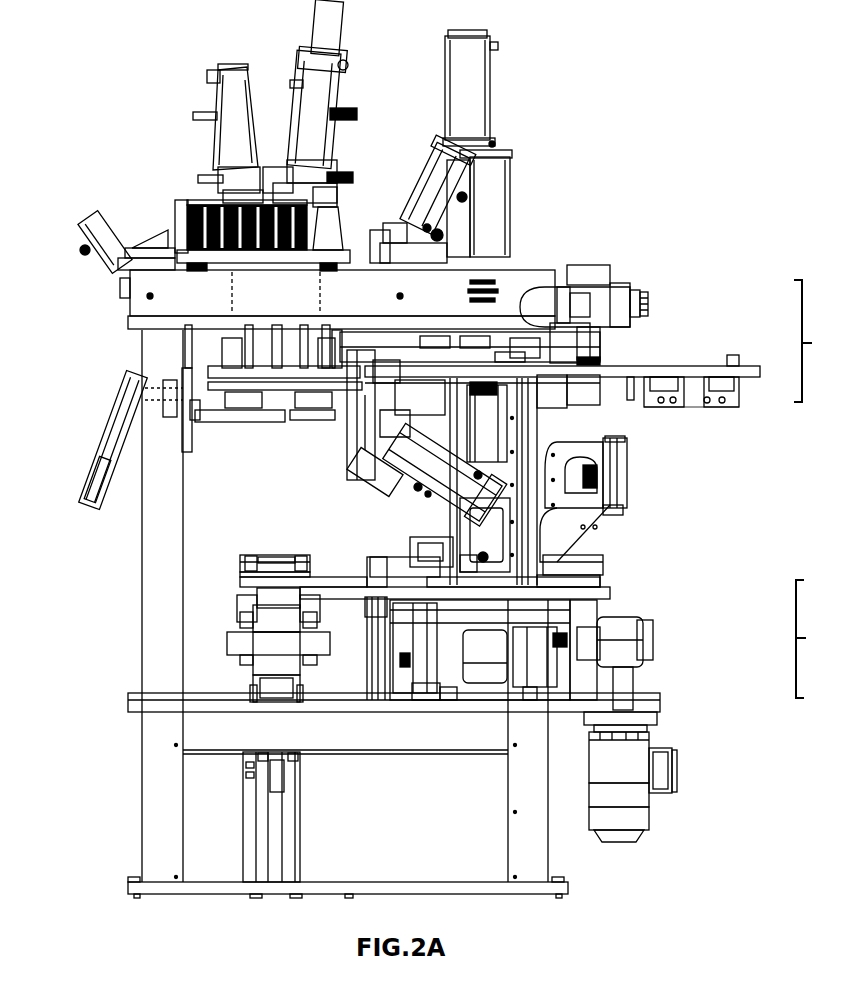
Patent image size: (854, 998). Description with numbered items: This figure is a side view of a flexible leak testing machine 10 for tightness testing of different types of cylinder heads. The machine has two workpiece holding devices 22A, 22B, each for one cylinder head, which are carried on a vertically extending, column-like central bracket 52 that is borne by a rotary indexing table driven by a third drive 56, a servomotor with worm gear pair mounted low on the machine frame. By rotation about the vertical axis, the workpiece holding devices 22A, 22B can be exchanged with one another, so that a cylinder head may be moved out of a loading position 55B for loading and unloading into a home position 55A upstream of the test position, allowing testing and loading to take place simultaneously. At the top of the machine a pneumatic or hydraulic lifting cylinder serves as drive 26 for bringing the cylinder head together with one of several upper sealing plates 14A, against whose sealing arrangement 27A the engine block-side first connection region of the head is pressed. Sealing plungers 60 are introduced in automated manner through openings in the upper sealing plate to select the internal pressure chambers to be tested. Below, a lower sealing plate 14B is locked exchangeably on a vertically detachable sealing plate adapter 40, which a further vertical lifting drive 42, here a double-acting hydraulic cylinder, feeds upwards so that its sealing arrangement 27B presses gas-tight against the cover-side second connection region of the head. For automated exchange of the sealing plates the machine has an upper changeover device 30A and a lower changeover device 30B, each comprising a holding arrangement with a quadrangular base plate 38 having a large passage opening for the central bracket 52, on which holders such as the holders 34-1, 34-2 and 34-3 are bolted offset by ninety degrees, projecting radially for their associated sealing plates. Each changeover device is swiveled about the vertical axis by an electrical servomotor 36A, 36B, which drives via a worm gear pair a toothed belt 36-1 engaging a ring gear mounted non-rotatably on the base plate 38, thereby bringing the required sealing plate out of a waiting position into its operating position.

The leak testing machine 10 is at (52, 80).
The sealing plungers 60 is at (230, 110).
The drive 26 is at (470, 88).
The holder 34-2 is at (507, 364).
The base plate 38 is at (523, 366).
The electrical servomotor 36A is at (623, 303).
The toothed belt 36-1 is at (547, 347).
The holder 34-3 is at (672, 370).
The upper sealing plate 14A is at (744, 420).
The upper changeover device 30A is at (823, 341).
The workpiece holding device 22B is at (330, 457).
The home position 55A is at (328, 499).
The loading position 55B is at (676, 485).
The workpiece holding device 22A is at (640, 497).
The sealing arrangement 27A is at (672, 400).
The sealing arrangement 27B is at (375, 515).
The central bracket 52 is at (280, 556).
The lower sealing plate 14B is at (257, 549).
The holder 34-1 is at (350, 583).
The sealing plate adapter 40 is at (283, 565).
The lower changeover device 30B is at (606, 640).
The electrical servomotor 36B is at (613, 645).
The third drive 56 is at (630, 797).
The vertical lifting drive 42 is at (228, 816).